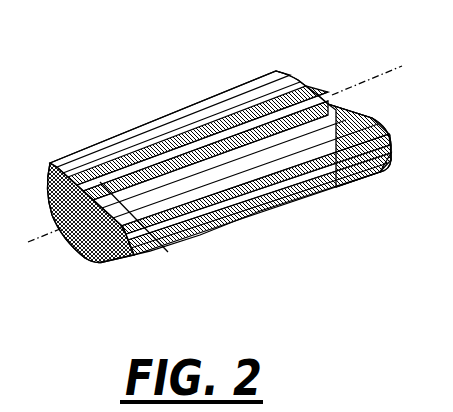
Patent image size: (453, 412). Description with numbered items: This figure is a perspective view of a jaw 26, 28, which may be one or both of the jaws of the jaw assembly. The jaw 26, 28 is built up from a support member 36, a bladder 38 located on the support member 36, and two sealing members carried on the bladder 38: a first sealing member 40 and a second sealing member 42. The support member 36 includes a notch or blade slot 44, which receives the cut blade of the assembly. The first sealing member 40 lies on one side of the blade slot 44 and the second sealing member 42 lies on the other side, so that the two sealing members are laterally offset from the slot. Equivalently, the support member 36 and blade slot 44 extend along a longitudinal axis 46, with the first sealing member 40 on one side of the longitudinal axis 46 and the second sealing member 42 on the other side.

The jaw 26 is at (225, 169).
The jaw 28 is at (225, 169).
The support member 36 is at (102, 265).
The bladder 38 is at (256, 210).
The first sealing member 40 is at (346, 128).
The second sealing member 42 is at (277, 89).
The blade slot 44 is at (327, 94).
The longitudinal axis 46 is at (23, 242).